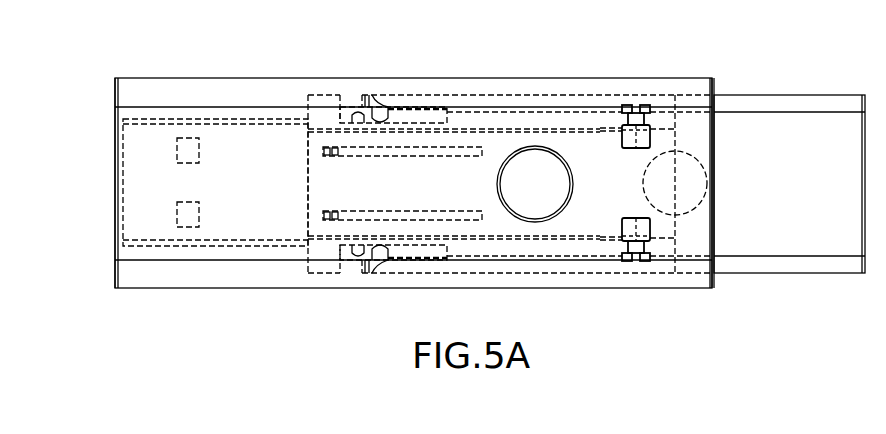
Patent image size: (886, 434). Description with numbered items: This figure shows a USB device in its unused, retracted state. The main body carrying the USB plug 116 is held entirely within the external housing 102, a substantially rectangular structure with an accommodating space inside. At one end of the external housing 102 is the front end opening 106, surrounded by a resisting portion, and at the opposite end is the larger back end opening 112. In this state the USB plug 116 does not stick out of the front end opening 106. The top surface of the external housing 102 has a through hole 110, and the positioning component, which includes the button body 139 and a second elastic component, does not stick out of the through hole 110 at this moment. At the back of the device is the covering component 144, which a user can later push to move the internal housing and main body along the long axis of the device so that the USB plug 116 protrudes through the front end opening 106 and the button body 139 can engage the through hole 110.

The external housing 102 is at (285, 95).
The front end opening 106 is at (115, 227).
The through hole 110 is at (565, 158).
The back end opening 112 is at (714, 225).
The USB plug 116 is at (153, 140).
The button body 139 is at (686, 163).
The covering component 144 is at (792, 125).